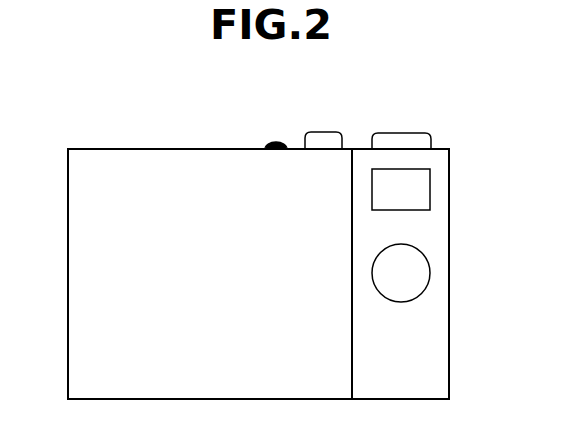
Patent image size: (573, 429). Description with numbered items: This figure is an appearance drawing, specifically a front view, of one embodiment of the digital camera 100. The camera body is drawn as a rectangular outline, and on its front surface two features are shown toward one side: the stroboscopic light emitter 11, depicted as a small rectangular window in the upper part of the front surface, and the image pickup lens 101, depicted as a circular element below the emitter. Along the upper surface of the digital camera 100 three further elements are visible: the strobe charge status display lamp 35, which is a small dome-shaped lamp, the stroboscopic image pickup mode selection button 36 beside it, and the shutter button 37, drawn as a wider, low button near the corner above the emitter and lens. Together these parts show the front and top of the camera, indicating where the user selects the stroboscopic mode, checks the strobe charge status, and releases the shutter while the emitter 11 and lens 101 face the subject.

The digital camera 100 is at (122, 127).
The strobe charge status display lamp 35 is at (276, 142).
The stroboscopic image pickup mode selection button 36 is at (325, 132).
The shutter button 37 is at (404, 133).
The stroboscopic light emitter 11 is at (430, 190).
The image pickup lens 101 is at (430, 273).